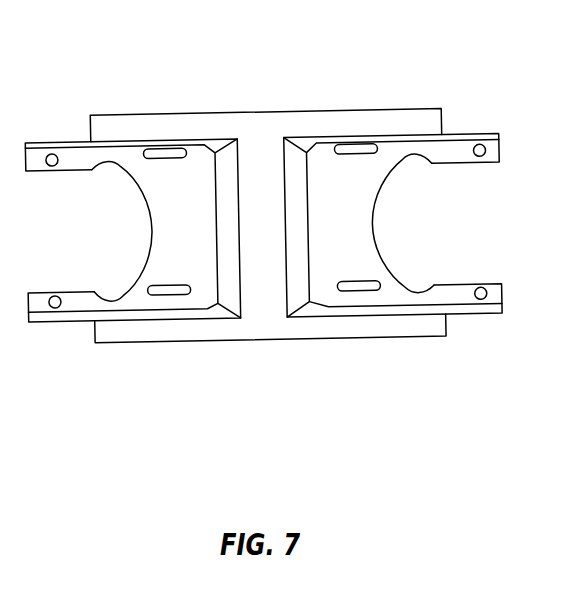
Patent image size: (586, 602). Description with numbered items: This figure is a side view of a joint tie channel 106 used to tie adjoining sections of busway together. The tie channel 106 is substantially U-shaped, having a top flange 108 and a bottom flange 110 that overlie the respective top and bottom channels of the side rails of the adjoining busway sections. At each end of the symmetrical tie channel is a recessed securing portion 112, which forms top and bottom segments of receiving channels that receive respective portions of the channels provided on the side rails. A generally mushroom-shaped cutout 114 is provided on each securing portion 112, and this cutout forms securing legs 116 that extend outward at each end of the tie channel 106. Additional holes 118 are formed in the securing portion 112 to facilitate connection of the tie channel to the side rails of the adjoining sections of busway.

The joint tie channel 106 is at (328, 101).
The top flange 108 is at (277, 112).
The bottom flange 110 is at (260, 341).
The recessed securing portion 112 is at (173, 197).
The mushroom-shaped cutout 114 is at (146, 190).
The securing legs 116 is at (62, 302).
The holes 118 is at (52, 154).